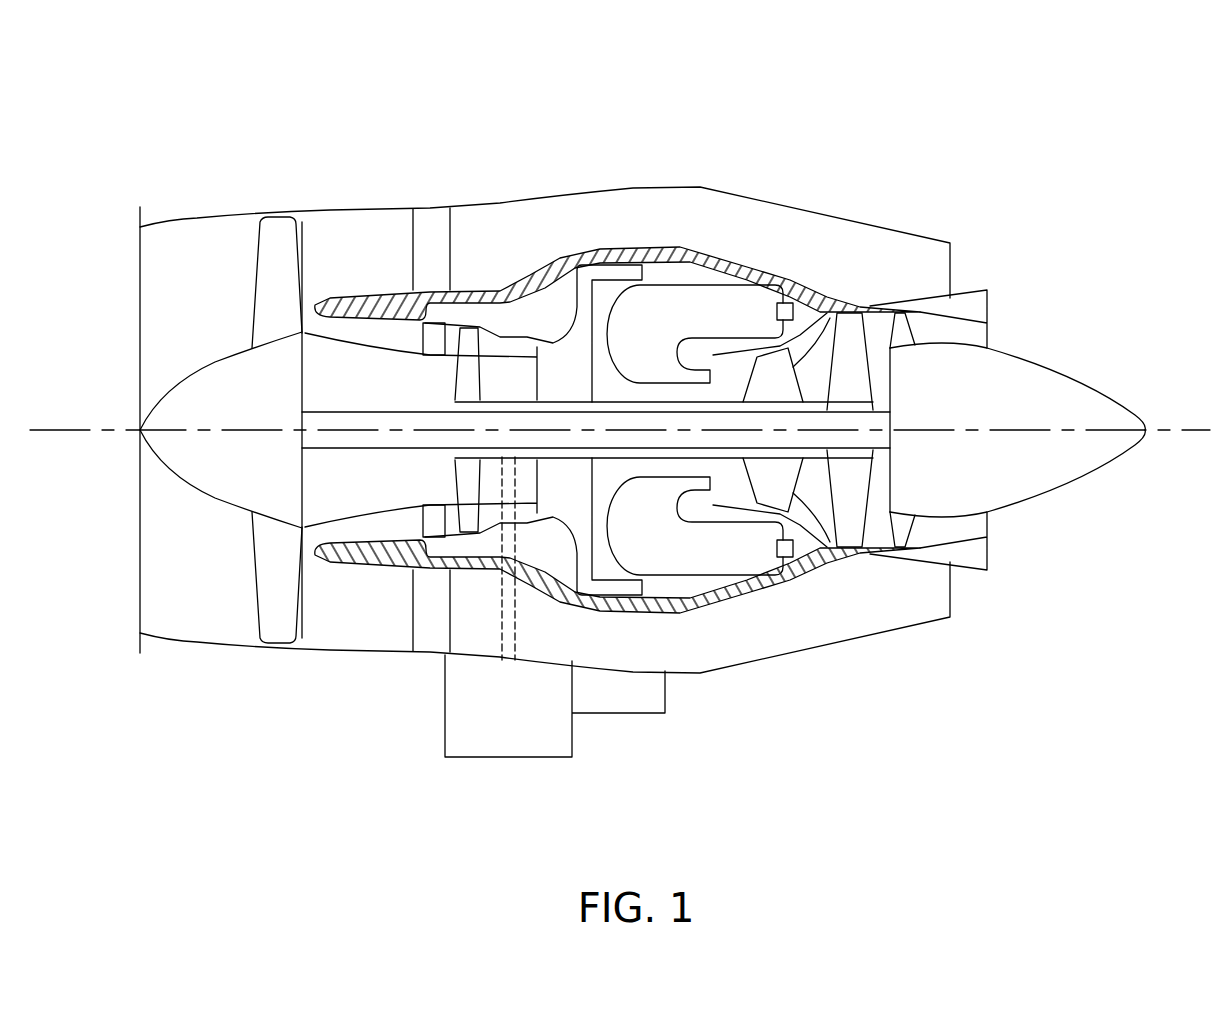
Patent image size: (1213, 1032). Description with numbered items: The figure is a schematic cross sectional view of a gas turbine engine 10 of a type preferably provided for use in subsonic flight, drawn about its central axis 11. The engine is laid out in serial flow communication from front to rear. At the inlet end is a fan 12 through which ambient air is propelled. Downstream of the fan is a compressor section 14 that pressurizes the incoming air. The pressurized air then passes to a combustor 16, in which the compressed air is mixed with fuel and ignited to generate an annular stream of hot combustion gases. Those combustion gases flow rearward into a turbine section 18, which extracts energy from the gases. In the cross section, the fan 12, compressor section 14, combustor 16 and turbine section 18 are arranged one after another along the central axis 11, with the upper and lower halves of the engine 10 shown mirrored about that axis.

The gas turbine engine 10 is at (832, 142).
The central axis 11 is at (1178, 428).
The fan 12 is at (272, 567).
The compressor section 14 is at (500, 340).
The combustor 16 is at (693, 305).
The turbine section 18 is at (808, 490).